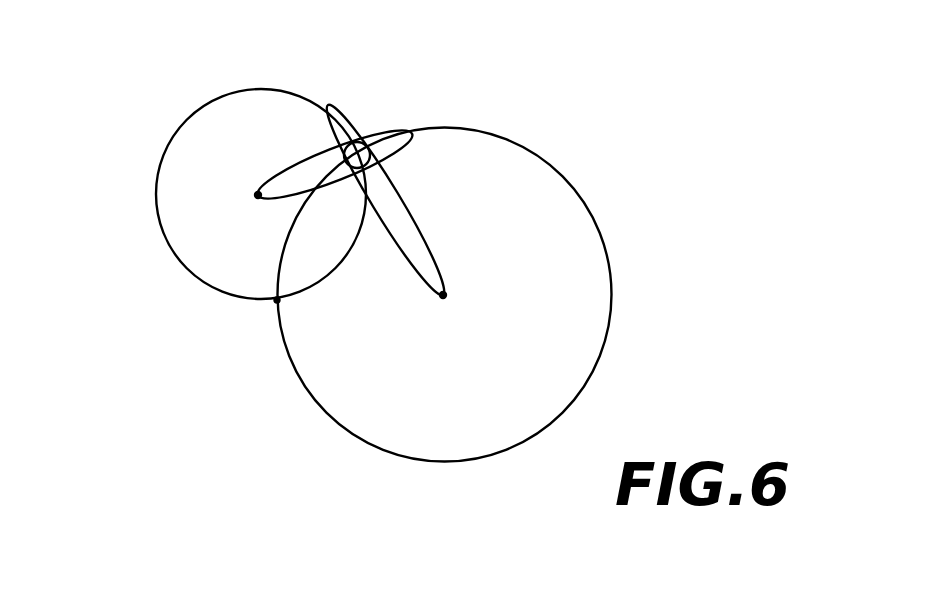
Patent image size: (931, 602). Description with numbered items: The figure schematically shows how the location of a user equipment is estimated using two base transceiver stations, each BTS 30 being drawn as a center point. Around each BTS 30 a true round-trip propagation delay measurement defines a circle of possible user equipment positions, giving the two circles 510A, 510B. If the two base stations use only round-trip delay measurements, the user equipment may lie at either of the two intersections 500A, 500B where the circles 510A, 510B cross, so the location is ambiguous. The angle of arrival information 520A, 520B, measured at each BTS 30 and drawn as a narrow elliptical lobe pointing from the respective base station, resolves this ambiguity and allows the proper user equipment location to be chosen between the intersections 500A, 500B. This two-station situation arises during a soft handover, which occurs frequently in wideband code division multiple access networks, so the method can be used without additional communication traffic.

The circle 510B is at (232, 96).
The circle 510A is at (607, 255).
The AOA information 520B is at (260, 190).
The AOA information 520A is at (427, 233).
The intersection 500B is at (360, 142).
The intersection 500A is at (277, 300).
The BTS 30 is at (258, 195).